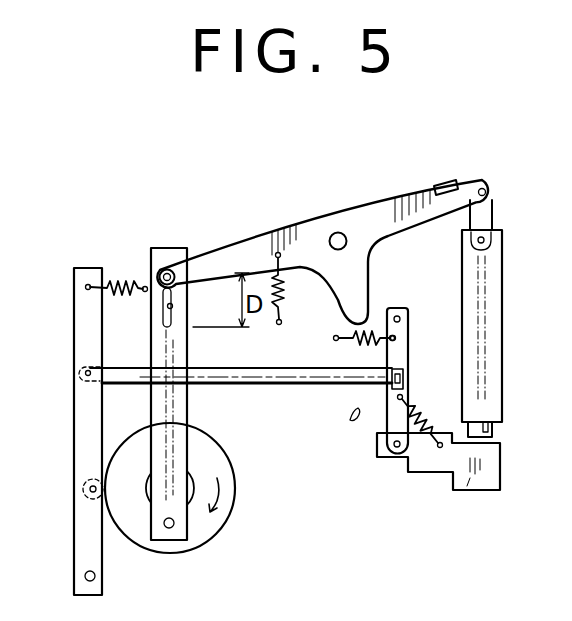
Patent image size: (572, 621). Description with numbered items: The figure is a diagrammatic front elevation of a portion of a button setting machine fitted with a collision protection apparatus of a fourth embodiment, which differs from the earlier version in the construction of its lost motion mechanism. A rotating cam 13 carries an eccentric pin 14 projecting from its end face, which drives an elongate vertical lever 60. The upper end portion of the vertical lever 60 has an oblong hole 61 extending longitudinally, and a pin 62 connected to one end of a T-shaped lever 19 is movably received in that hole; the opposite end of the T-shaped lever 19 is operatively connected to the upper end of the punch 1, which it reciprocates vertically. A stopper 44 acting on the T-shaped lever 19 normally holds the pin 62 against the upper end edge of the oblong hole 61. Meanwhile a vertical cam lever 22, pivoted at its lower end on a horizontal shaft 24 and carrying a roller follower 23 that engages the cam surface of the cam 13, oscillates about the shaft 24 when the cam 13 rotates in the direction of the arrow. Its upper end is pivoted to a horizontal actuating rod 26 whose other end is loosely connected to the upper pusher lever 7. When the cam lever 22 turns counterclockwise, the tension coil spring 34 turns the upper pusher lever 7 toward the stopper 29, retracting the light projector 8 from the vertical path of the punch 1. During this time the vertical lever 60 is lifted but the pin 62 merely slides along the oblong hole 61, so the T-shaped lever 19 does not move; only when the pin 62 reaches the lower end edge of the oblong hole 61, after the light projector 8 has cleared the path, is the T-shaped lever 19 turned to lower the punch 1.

The punch 1 is at (503, 320).
The upper pusher lever 7 is at (410, 352).
The light projector 8 is at (466, 490).
The cam 13 is at (213, 520).
The eccentric pin 14 is at (170, 530).
The T-shaped lever 19 is at (252, 247).
The cam lever 22 is at (73, 410).
The roller follower 23 is at (83, 488).
The horizontal shaft 24 is at (85, 574).
The actuating rod 26 is at (290, 383).
The stopper 29 is at (350, 420).
The tension coil spring 34 is at (365, 335).
The stopper 44 is at (455, 173).
The vertical lever 60 is at (188, 405).
The oblong hole 61 is at (172, 308).
The pin 62 is at (167, 268).